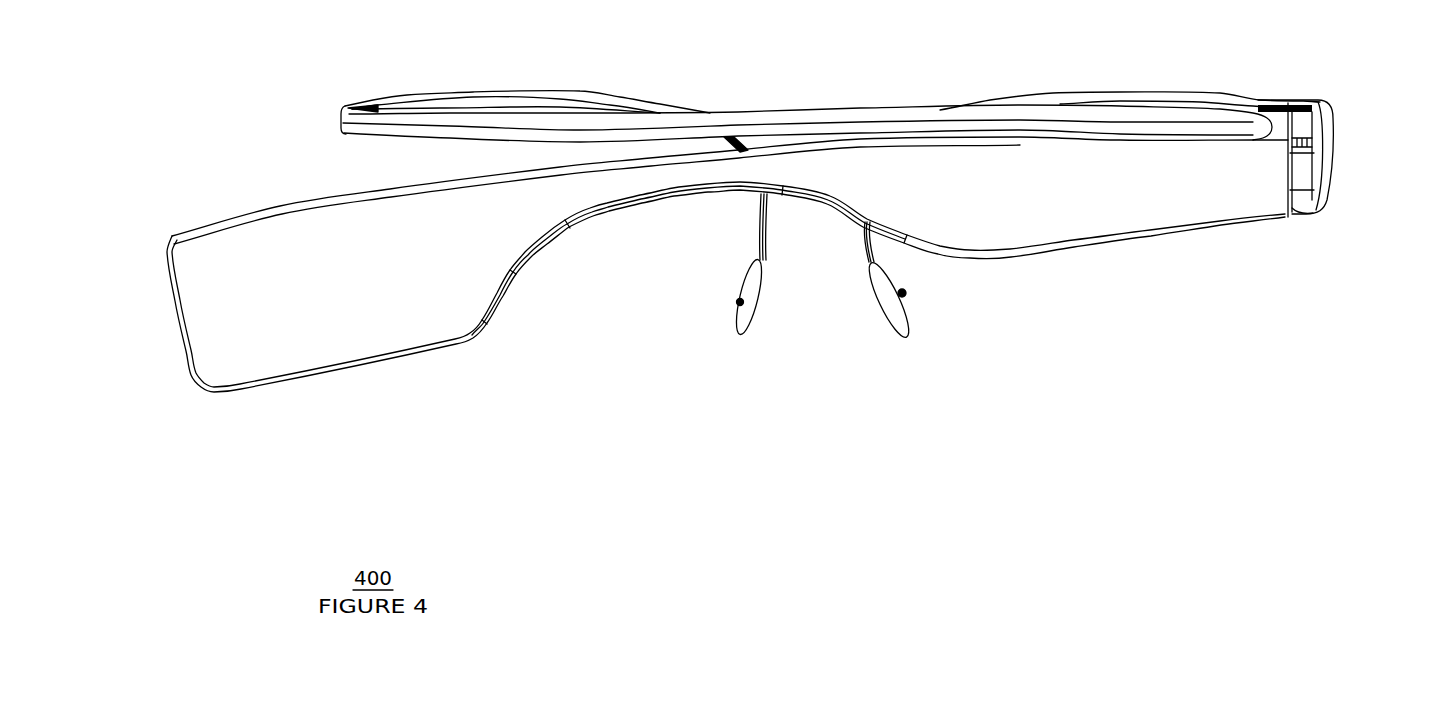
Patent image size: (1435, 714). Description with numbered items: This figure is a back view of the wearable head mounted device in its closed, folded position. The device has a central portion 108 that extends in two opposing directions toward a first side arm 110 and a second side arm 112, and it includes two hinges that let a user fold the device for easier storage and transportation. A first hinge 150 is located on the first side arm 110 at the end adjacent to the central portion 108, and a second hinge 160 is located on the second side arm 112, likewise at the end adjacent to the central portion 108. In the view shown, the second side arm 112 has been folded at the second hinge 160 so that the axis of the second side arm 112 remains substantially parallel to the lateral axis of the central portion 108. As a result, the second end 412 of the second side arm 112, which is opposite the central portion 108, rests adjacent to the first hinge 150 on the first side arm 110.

The first side arm 110 is at (207, 243).
The central portion 108 is at (473, 97).
The second side arm 112 is at (777, 113).
The second end of the second side arm 412 is at (1213, 117).
The second hinge 160 is at (325, 117).
The first hinge 150 is at (1345, 172).